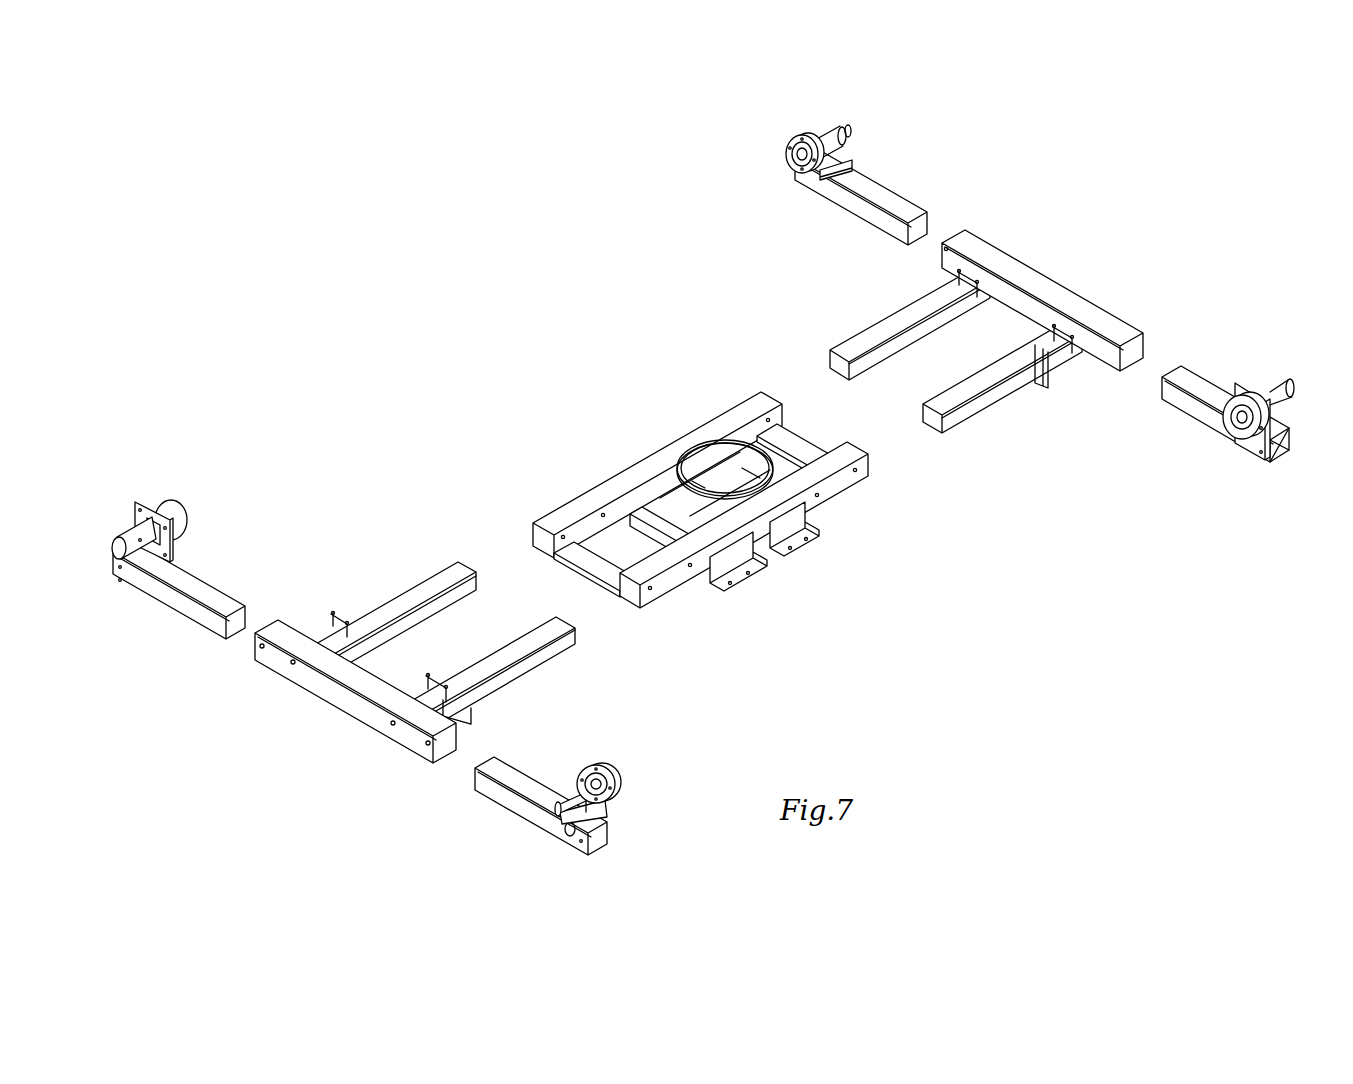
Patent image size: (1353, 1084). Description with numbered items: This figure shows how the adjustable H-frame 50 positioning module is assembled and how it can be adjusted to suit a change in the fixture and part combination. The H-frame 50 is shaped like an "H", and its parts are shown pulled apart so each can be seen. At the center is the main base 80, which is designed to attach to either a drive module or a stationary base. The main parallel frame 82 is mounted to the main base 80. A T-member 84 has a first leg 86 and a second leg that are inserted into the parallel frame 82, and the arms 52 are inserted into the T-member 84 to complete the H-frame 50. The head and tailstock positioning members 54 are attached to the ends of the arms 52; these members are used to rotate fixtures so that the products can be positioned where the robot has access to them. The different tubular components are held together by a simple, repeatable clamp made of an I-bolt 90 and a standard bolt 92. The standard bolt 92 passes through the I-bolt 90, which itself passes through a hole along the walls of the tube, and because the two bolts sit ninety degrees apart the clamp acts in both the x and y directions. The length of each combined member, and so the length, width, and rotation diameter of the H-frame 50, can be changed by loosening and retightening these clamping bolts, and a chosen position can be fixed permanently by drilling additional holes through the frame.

The H-frame 50 is at (491, 429).
The arms 52 is at (868, 190).
The head and tailstock positioning members 54 is at (786, 160).
The main base 80 is at (818, 522).
The main parallel frame 82 is at (568, 505).
The T-member 84 is at (244, 654).
The first leg 86 is at (428, 585).
The I-bolt 90 is at (458, 710).
The standard bolt 92 is at (345, 624).